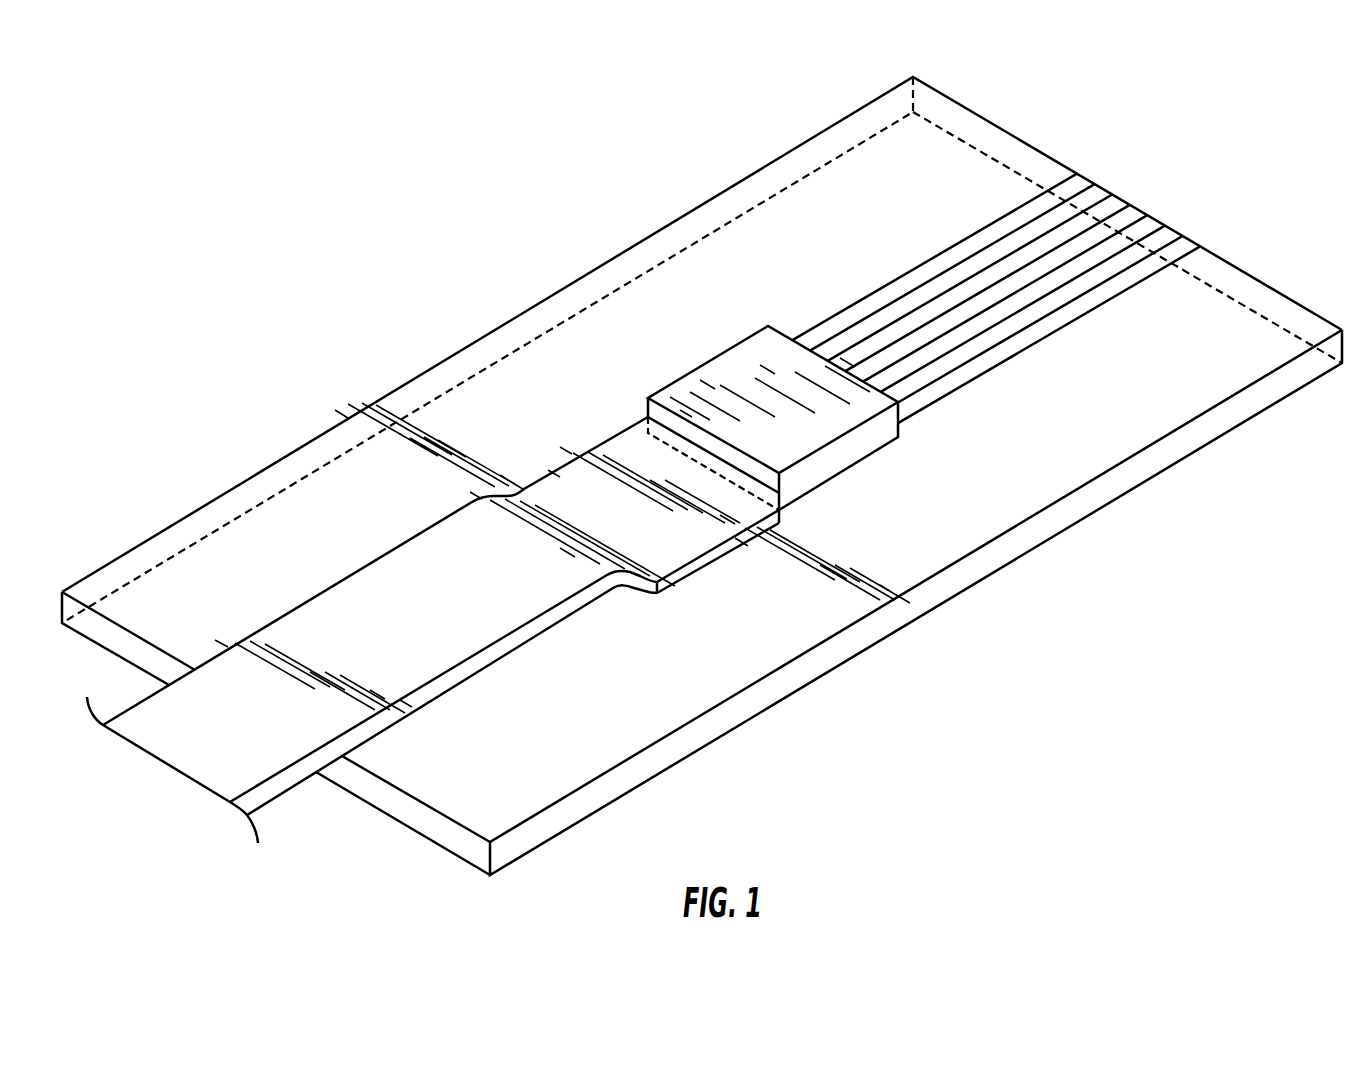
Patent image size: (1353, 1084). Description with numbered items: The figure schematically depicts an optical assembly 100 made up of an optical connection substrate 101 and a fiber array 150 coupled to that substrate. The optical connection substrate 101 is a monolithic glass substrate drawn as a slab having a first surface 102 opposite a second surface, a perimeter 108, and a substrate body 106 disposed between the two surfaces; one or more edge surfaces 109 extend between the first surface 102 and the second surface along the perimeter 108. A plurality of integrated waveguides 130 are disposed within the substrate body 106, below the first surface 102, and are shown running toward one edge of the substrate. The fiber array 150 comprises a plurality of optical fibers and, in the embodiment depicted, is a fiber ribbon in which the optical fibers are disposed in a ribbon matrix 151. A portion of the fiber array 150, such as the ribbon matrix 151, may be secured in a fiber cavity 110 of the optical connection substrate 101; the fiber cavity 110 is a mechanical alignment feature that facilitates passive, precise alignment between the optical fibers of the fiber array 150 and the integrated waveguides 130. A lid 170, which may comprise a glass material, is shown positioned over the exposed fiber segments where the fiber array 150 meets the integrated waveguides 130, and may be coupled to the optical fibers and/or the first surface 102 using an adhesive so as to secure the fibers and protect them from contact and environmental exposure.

The optical assembly 100 is at (1269, 189).
The optical connection substrate 101 is at (749, 173).
The first surface 102 is at (1208, 378).
The substrate body 106 is at (922, 552).
The perimeter 108 is at (678, 730).
The edge surface 109 is at (787, 685).
The fiber cavity 110 is at (710, 566).
The integrated waveguides 130 is at (1077, 261).
The fiber array 150 is at (254, 626).
The ribbon matrix 151 is at (277, 787).
The lid 170 is at (697, 370).